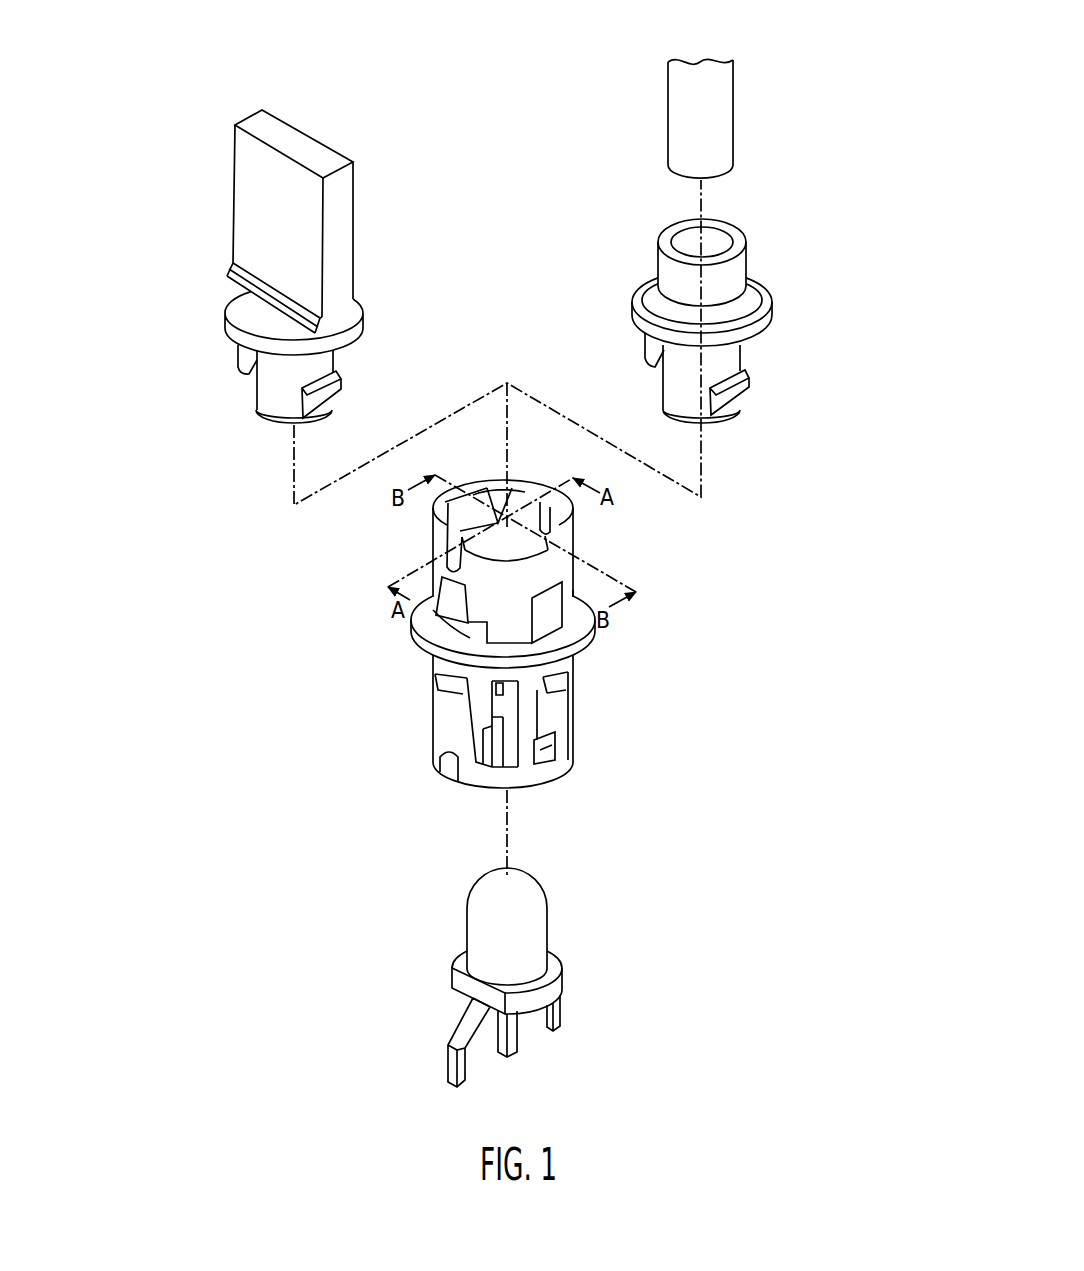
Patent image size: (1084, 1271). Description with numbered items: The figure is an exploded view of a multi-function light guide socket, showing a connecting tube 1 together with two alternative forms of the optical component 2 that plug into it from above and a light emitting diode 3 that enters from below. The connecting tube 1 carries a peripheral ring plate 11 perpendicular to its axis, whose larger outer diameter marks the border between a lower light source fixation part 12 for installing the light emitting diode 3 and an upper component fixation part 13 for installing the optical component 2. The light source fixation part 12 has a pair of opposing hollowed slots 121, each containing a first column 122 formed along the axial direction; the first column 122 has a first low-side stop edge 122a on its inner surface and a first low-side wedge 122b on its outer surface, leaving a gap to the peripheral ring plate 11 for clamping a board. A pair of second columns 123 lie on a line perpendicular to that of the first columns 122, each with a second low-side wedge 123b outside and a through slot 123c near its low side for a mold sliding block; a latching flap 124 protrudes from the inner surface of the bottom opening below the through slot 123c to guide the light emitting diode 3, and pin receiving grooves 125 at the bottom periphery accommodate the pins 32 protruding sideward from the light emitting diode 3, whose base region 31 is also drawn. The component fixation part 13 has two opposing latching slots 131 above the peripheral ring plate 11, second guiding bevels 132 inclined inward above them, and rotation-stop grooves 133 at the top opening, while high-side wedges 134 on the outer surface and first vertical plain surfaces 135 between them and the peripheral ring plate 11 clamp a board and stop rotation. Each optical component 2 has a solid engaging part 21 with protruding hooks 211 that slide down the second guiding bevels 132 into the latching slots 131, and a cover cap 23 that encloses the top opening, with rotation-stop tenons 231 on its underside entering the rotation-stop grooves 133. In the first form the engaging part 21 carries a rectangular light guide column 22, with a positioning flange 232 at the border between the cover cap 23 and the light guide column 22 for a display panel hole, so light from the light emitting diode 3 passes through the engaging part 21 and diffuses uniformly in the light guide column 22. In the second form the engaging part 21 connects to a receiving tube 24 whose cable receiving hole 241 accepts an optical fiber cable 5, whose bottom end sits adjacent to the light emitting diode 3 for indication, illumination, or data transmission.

The connecting tube 1 is at (612, 533).
The peripheral ring plate 11 is at (577, 640).
The light source fixation part 12 is at (597, 668).
The hollowed slot 121 is at (493, 752).
The first column 122 is at (450, 728).
The first low-side stop edge 122a is at (487, 752).
The first low-side wedge 122b is at (447, 680).
The second column 123 is at (555, 712).
The second low-side wedge 123b is at (567, 665).
The through slot 123c is at (565, 757).
The latching flap 124 is at (550, 757).
The pin receiving groove 125 is at (455, 773).
The component fixation part 13 is at (587, 500).
The latching slot 131 is at (583, 618).
The second guiding bevel 132 is at (483, 499).
The rotation-stop groove 133 is at (537, 507).
The high-side wedge 134 is at (468, 627).
The first vertical plain surface 135 is at (462, 643).
The optical component 2 is at (381, 184).
The engaging part 21 is at (372, 323).
The protruding hook 211 is at (323, 386).
The light guide column 22 is at (342, 218).
The cover cap 23 is at (250, 312).
The rotation-stop tenon 231 is at (247, 360).
The positioning flange 232 is at (247, 282).
The receiving tube 24 is at (740, 263).
The cable receiving hole 241 is at (687, 237).
The light emitting diode 3 is at (548, 905).
The flange of LED 31 is at (552, 985).
The pin 32 is at (560, 1012).
The optical fiber cable 5 is at (683, 102).